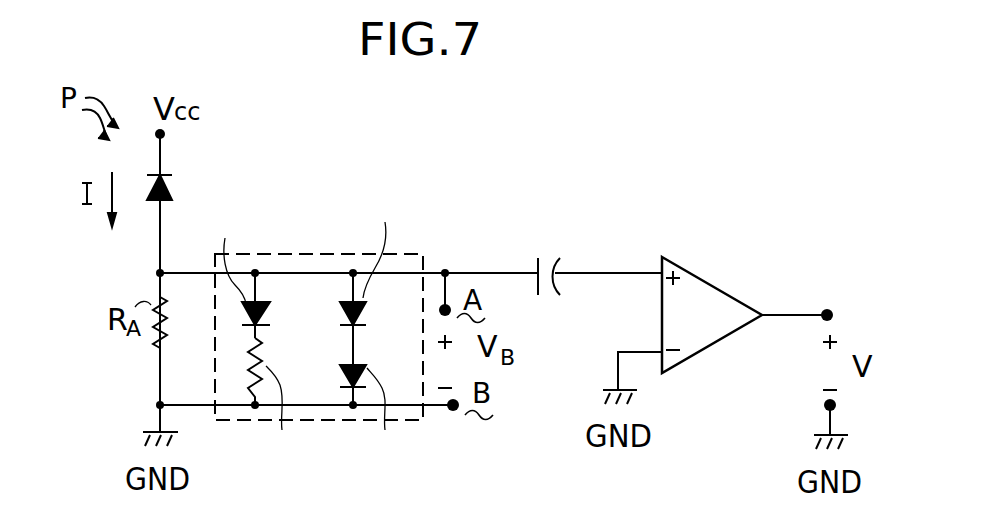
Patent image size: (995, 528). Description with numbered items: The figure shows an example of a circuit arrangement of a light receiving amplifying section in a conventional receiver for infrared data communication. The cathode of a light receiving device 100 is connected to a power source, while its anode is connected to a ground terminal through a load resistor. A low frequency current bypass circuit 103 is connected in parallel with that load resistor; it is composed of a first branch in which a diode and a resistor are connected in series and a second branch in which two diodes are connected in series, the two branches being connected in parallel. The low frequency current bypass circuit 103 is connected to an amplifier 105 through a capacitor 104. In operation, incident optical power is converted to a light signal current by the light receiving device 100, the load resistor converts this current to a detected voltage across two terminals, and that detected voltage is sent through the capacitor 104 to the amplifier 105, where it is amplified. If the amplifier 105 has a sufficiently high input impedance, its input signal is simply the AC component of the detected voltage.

The light receiving device 100 is at (173, 190).
The low frequency current bypass circuit 103 is at (280, 252).
The capacitor 104 is at (553, 250).
The amplifier 105 is at (705, 278).